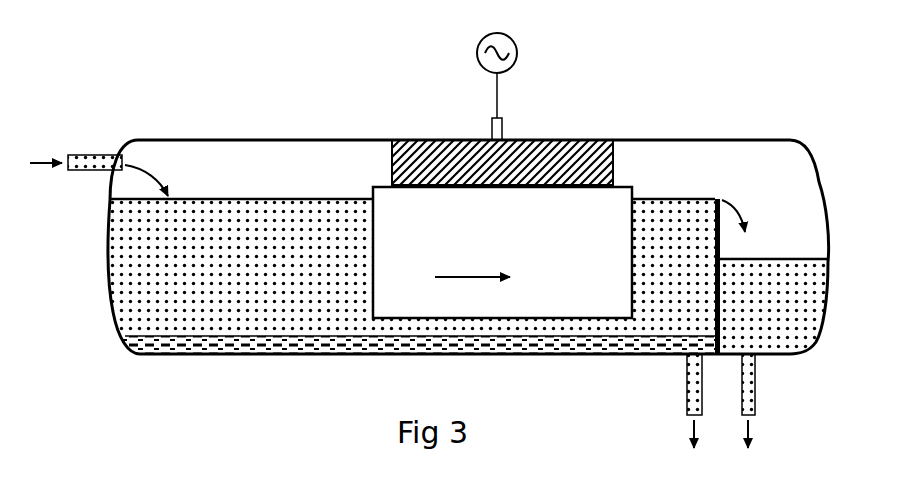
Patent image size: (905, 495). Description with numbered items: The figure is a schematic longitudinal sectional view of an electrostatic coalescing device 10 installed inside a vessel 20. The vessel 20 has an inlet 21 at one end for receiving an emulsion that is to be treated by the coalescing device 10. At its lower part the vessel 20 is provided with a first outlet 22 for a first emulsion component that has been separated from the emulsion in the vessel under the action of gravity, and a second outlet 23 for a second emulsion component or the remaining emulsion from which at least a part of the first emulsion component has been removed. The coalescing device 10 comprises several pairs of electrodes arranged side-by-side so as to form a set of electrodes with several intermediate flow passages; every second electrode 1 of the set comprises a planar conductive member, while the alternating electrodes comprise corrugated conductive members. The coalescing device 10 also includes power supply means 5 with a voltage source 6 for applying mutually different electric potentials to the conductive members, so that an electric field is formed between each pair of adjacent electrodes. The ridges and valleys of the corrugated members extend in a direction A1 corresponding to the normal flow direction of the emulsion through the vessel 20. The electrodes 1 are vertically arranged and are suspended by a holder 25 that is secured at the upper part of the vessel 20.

The electrode 1 is at (618, 192).
The power supply means 5 is at (520, 99).
The voltage source 6 is at (508, 40).
The electrostatic coalescing device 10 is at (372, 176).
The vessel 20 is at (752, 140).
The inlet 21 is at (96, 155).
The first outlet 22 is at (687, 385).
The second outlet 23 is at (755, 380).
The holder 25 is at (430, 140).
The direction A1 is at (460, 270).